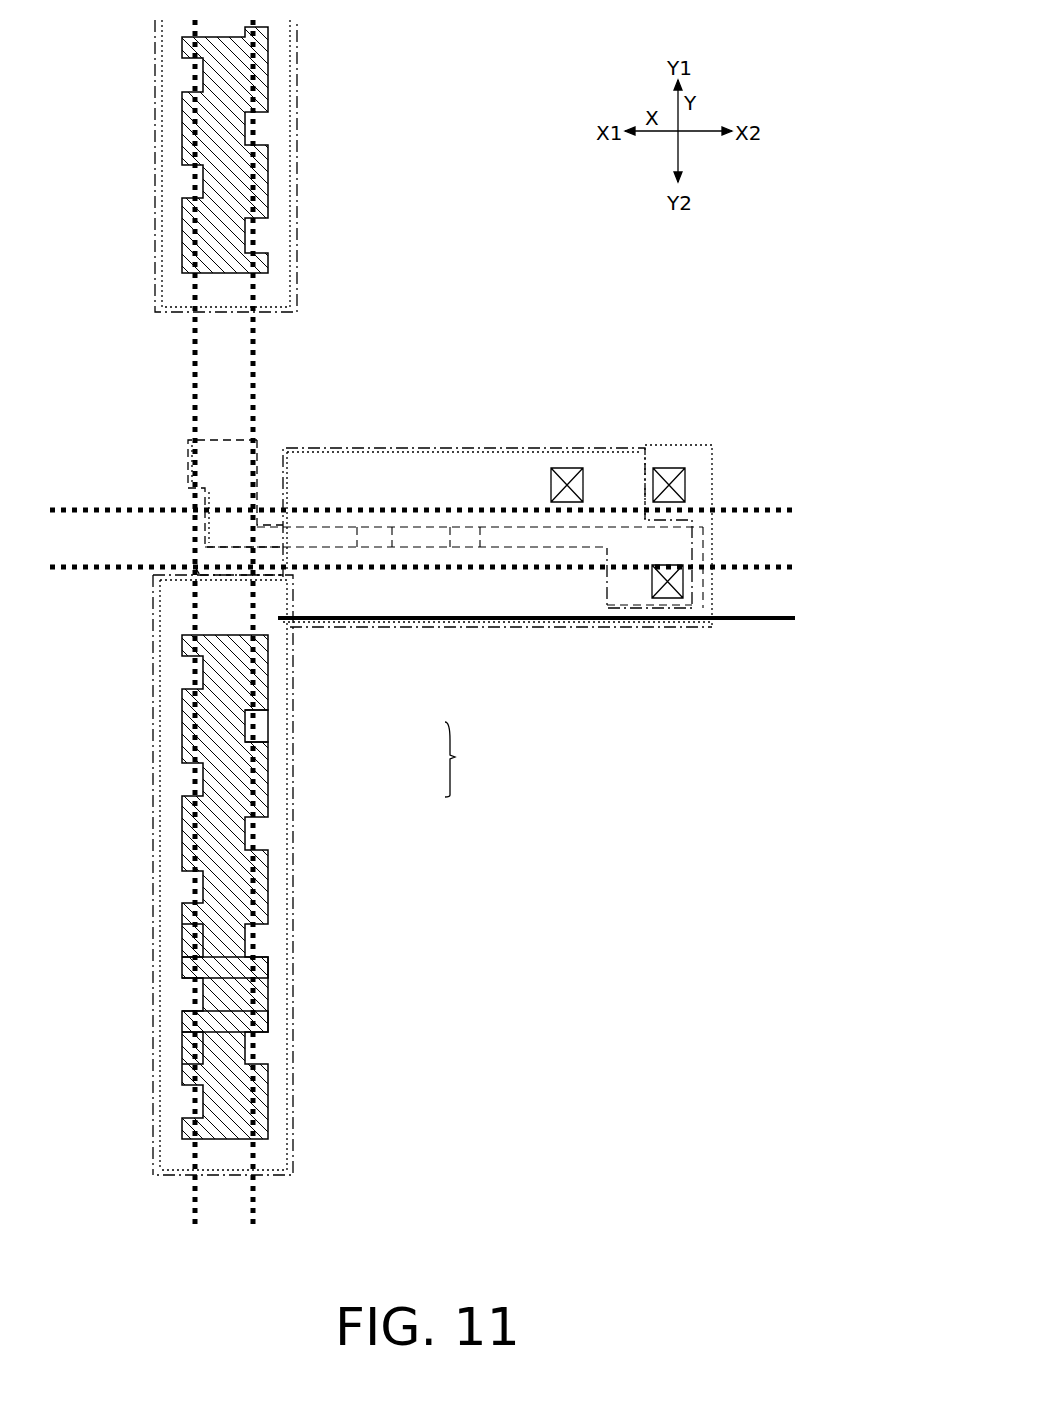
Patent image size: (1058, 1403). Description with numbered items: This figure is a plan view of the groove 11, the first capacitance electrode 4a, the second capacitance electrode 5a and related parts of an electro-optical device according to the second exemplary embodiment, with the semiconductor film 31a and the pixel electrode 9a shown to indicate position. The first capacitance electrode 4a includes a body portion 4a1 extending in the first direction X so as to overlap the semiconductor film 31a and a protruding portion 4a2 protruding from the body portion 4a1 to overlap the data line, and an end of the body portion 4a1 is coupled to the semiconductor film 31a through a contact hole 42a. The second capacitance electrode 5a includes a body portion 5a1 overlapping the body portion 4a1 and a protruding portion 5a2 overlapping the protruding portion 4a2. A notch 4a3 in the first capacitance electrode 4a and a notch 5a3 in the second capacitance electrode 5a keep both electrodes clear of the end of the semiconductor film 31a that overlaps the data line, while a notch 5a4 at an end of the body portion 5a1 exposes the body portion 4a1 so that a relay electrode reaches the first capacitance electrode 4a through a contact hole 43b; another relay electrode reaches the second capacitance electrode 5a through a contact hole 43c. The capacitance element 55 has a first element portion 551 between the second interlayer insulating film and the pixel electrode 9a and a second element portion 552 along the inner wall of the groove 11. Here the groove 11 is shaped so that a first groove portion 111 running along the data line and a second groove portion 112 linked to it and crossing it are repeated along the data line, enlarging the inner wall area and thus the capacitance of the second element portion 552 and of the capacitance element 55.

The pixel electrode 9a is at (263, 182).
The notch 4a3 is at (290, 470).
The notch 5a3 is at (288, 493).
The body portion 4a1 is at (393, 448).
The body portion 5a1 is at (443, 448).
The notch 5a4 is at (648, 465).
The contact hole 43c is at (565, 468).
The contact hole 43b is at (682, 480).
The contact hole 42a is at (672, 598).
The semiconductor film 31a is at (558, 548).
The protruding portion 4a2 is at (152, 620).
The protruding portion 5a2 is at (160, 660).
The first capacitance electrode 4a is at (293, 898).
The second capacitance electrode 5a is at (296, 928).
The groove 11 is at (268, 775).
The first groove portion 111 is at (182, 1052).
The second groove portion 112 is at (228, 1033).
The first element portion 551 is at (358, 592).
The second element portion 552 is at (268, 725).
The capacitance element 55 is at (464, 759).